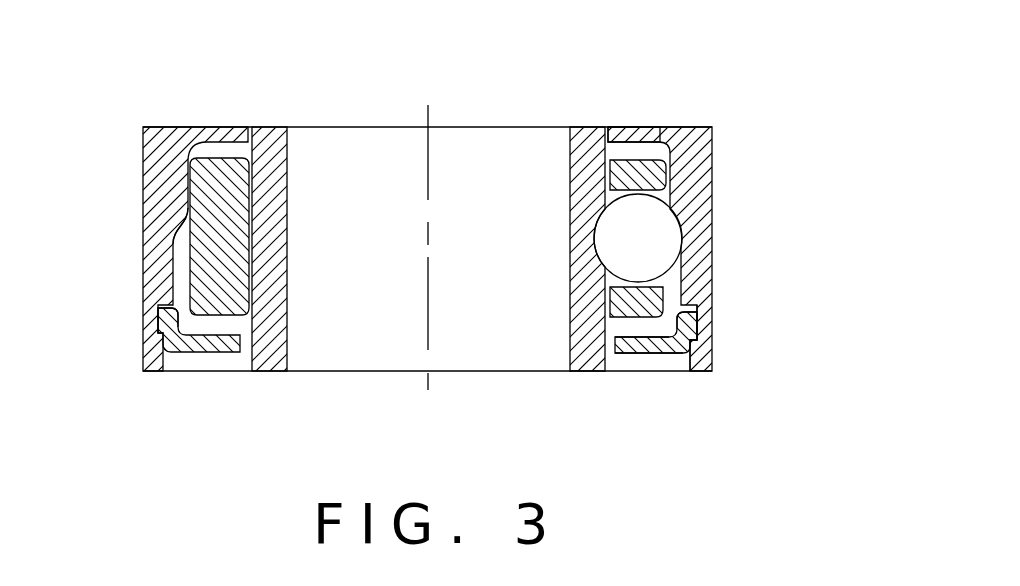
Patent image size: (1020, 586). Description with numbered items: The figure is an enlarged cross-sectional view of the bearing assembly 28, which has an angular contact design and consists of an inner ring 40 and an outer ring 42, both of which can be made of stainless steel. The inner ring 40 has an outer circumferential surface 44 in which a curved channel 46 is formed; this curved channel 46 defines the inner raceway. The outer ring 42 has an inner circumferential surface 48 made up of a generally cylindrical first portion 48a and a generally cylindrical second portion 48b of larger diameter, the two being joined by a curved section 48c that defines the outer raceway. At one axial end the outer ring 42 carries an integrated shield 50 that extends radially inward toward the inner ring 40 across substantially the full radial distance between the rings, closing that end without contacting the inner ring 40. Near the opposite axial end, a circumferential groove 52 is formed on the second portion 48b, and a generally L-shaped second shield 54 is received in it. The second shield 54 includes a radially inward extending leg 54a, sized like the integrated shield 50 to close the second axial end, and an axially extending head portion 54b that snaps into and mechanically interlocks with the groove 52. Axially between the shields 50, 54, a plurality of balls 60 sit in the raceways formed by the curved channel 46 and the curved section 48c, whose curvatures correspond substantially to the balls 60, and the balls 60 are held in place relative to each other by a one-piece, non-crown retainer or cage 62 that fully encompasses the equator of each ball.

The bearing assembly 28 is at (404, 92).
The inner ring 40 is at (580, 304).
The outer ring 42 is at (703, 186).
The outer circumferential surface 44 is at (229, 324).
The curved channel 46 is at (262, 238).
The inner circumferential surface 48 is at (668, 220).
The first portion 48a is at (196, 188).
The second portion 48b is at (178, 292).
The curved section 48c is at (185, 233).
The integrated shield 50 is at (631, 120).
The circumferential groove 52 is at (699, 332).
The second shield 54 is at (702, 361).
The radially inward extending leg 54a is at (643, 355).
The axially extending head portion 54b is at (696, 314).
The balls 60 is at (634, 224).
The retainer or cage 62 is at (653, 302).